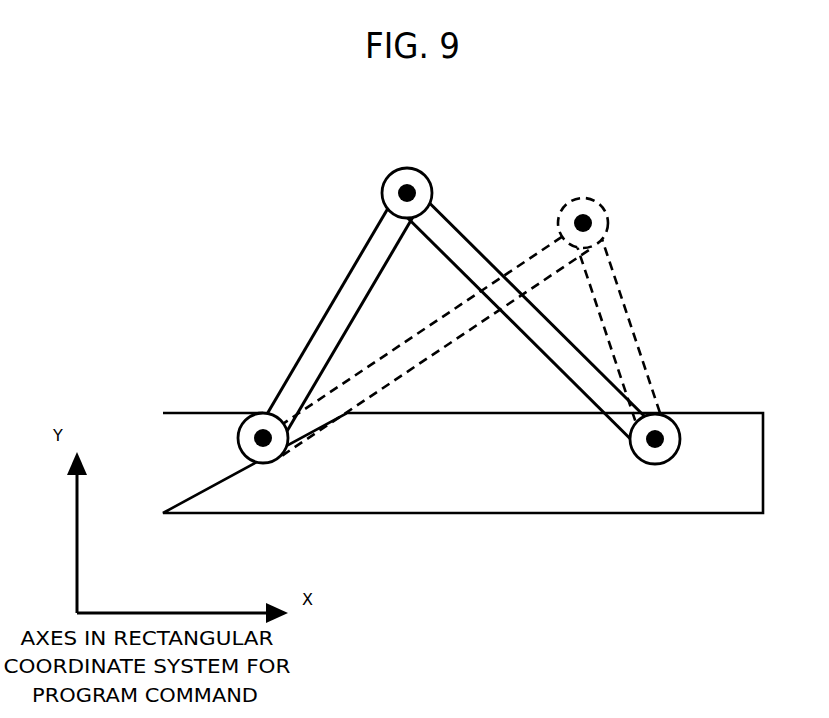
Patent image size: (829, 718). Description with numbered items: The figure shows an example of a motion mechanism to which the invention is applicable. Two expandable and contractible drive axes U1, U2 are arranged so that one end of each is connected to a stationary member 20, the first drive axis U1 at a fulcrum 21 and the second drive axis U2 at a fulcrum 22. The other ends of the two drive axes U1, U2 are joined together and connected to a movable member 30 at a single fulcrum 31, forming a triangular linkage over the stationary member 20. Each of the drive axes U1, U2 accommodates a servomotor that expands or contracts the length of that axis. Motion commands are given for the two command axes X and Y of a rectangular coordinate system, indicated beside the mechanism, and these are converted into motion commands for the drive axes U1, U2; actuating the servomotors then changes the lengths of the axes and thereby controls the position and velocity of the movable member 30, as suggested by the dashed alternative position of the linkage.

The stationary member 20 is at (590, 513).
The fulcrum 21 is at (262, 414).
The fulcrum 22 is at (664, 420).
The movable member 30 is at (430, 182).
The fulcrum 31 is at (395, 185).
The drive axis U1 is at (357, 276).
The drive axis U2 is at (519, 324).